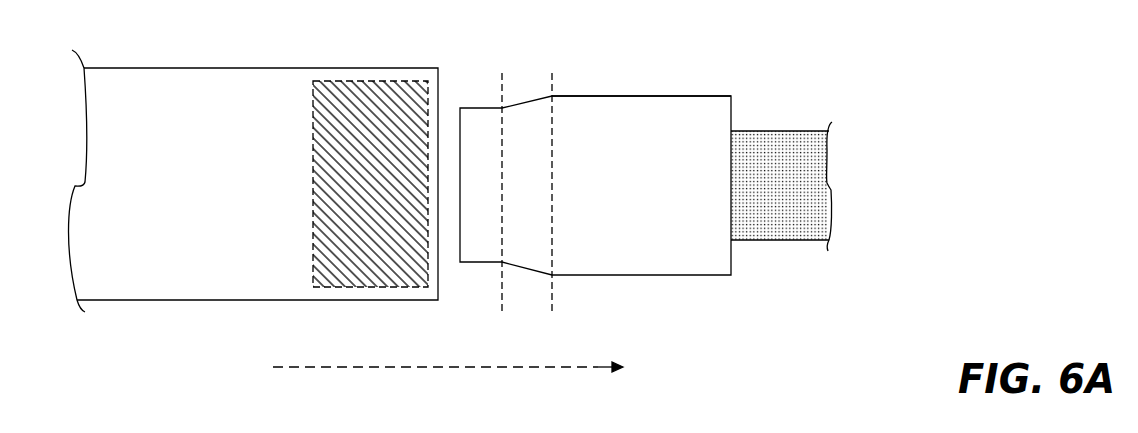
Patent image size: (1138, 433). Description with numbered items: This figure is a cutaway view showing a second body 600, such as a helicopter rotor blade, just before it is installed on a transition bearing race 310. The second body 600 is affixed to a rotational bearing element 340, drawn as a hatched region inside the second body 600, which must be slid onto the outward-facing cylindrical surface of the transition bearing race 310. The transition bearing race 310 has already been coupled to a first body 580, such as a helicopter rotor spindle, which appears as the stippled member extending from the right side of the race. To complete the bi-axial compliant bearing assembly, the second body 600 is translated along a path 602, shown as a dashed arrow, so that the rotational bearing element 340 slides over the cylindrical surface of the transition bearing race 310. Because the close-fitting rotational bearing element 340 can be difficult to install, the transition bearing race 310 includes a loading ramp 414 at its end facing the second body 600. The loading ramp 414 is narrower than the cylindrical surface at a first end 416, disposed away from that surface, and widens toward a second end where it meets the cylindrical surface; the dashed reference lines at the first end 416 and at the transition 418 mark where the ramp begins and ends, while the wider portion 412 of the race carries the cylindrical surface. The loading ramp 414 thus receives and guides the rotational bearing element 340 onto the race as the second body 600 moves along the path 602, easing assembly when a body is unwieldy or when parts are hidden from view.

The second body 600 is at (294, 68).
The rotational bearing element 340 is at (390, 81).
The transition bearing race 310 is at (722, 289).
The loading ramp 414 is at (529, 99).
The nozzle body 412 is at (647, 101).
The first end 416 is at (502, 312).
The second reference plane 418 is at (552, 312).
The first body 580 is at (808, 131).
The path 602 is at (398, 368).